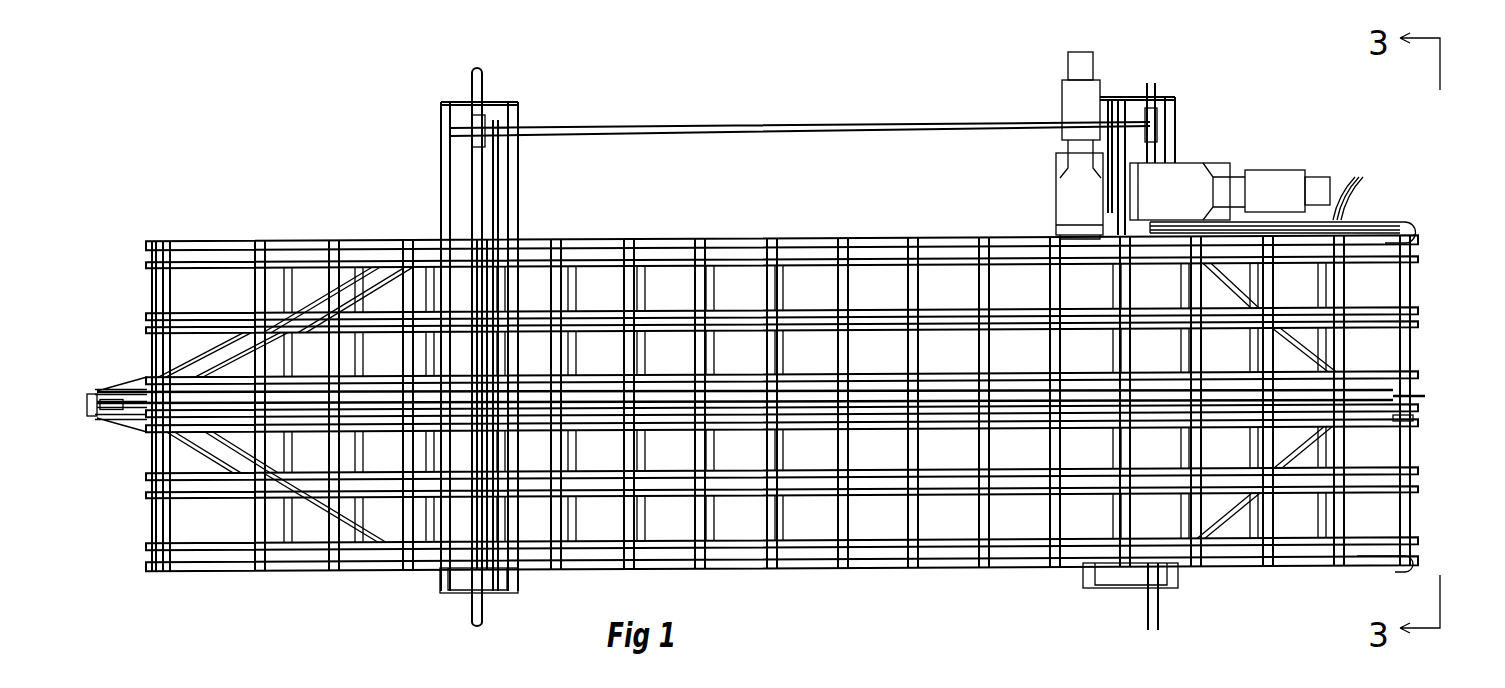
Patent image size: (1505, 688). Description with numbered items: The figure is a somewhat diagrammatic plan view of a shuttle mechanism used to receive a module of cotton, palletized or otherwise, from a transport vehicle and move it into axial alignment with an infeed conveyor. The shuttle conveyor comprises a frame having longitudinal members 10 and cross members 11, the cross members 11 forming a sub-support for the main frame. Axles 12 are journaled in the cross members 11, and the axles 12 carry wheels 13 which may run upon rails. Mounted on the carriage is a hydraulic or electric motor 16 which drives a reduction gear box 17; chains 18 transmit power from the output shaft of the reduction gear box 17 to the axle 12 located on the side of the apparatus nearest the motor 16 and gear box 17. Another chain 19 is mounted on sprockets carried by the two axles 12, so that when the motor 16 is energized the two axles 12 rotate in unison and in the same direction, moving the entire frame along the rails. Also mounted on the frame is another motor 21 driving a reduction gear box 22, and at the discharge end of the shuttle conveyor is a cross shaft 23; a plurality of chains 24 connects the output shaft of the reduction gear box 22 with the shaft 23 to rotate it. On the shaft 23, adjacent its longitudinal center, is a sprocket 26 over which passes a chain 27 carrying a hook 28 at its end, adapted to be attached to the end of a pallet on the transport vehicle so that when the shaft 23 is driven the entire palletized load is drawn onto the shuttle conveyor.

The longitudinal members 10 is at (670, 239).
The cross members 11 is at (443, 170).
The axles 12 is at (727, 128).
The wheels 13 is at (473, 121).
The motor 16 is at (1066, 100).
The reduction gear box 17 is at (1060, 173).
The chains 18 is at (1110, 107).
The chain 19 is at (497, 123).
The motor 21 is at (1268, 185).
The reduction gear box 22 is at (1190, 208).
The cross shaft 23 is at (1410, 389).
The chains 24 is at (1340, 196).
The sprocket 26 is at (1410, 401).
The chain 27 is at (127, 408).
The hook 28 is at (90, 396).